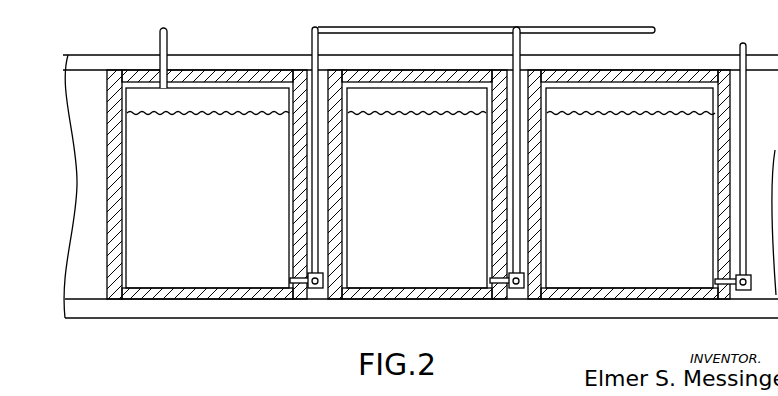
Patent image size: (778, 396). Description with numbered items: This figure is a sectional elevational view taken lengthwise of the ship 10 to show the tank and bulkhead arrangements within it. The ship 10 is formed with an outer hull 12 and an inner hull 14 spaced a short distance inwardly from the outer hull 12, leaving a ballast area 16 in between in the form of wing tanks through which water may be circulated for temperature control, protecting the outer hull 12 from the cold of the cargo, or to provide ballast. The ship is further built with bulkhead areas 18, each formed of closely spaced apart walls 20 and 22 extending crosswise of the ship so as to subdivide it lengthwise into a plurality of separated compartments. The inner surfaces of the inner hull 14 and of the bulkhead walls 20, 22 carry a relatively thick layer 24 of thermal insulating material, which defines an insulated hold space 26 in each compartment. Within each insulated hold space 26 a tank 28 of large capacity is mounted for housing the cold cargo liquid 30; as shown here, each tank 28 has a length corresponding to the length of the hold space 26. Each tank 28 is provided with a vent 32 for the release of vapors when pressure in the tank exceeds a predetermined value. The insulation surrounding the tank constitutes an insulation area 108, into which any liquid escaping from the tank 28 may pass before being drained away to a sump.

The ship 10 is at (106, 35).
The outer hull 12 is at (201, 318).
The inner hull 14 is at (252, 299).
The ballast area 16 is at (126, 310).
The bulkhead area 18 is at (305, 72).
The bulkhead wall 20 is at (300, 152).
The bulkhead wall 22 is at (332, 157).
The layer of thermal insulating material 24 is at (298, 201).
The insulated hold space 26 is at (218, 82).
The tank 28 is at (127, 220).
The cold cargo liquid 30 is at (240, 112).
The vent 32 is at (167, 47).
The insulation area 108 is at (122, 164).